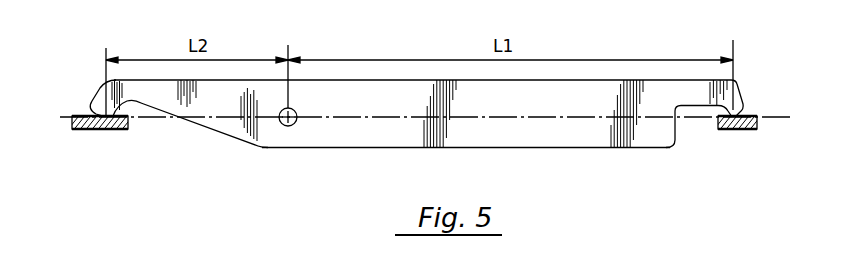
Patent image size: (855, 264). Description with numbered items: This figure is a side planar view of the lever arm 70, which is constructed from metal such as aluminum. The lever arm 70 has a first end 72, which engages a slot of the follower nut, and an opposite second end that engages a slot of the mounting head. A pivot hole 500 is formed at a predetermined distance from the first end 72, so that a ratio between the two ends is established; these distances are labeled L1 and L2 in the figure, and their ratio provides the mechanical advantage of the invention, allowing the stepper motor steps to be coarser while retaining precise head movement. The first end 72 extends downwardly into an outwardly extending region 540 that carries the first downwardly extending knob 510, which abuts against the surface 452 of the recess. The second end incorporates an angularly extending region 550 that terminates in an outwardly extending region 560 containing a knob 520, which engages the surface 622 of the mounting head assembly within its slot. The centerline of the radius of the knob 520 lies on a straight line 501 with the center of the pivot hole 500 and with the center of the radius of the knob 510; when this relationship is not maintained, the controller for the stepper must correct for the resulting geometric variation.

The lever arm 70 is at (350, 76).
The first end 72 is at (672, 155).
The surface 452 is at (732, 131).
The hole 500 is at (298, 114).
The straight line 501 is at (540, 117).
The first downwardly extending knob 510 is at (740, 110).
The knob 520 is at (94, 101).
The outwardly extending region 540 is at (702, 93).
The angularly extending region 550 is at (221, 134).
The outwardly extending region 560 is at (127, 92).
The surface 622 is at (107, 130).